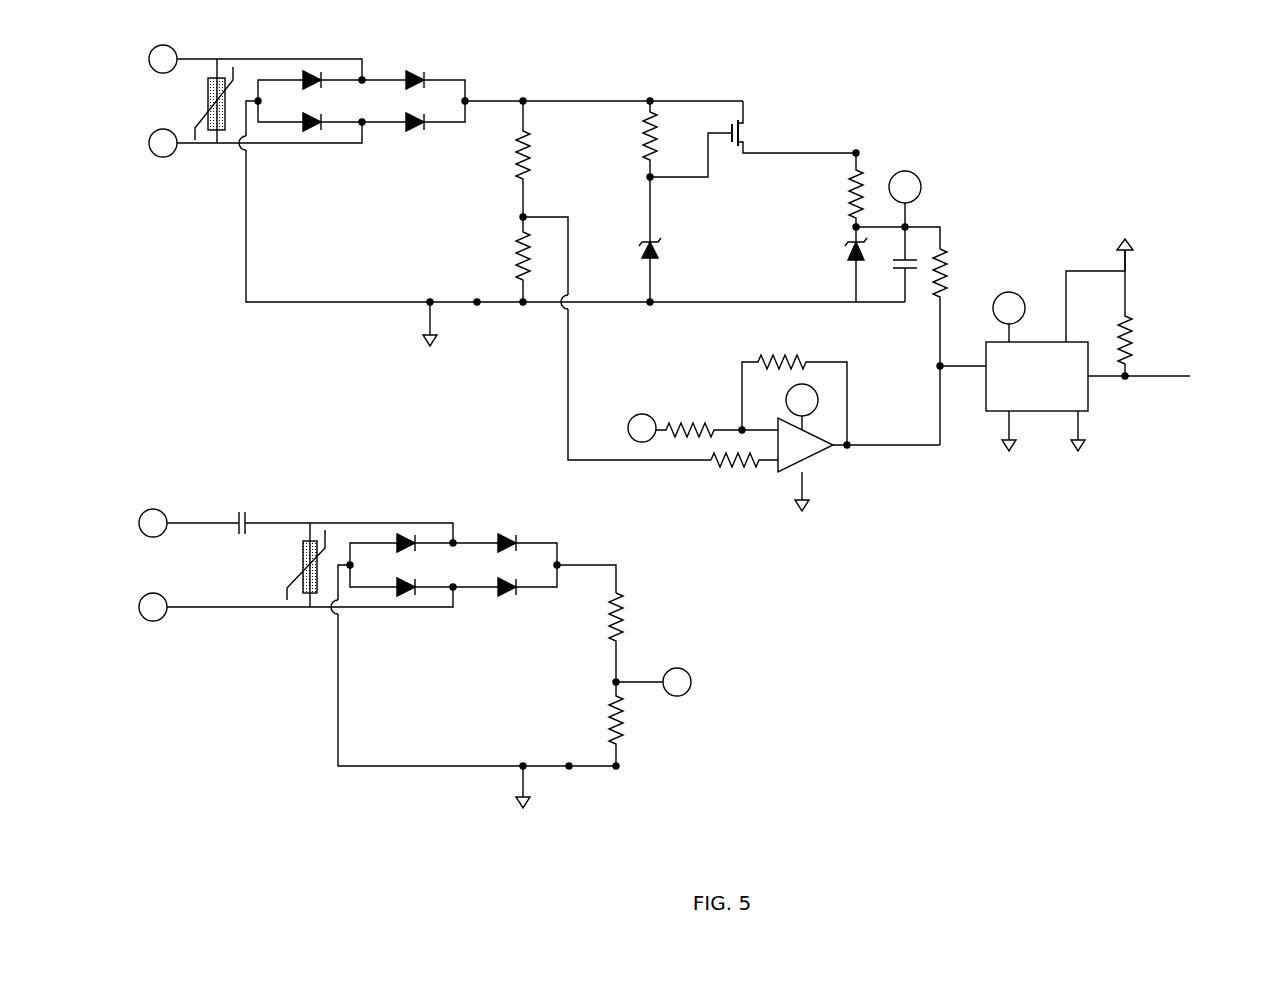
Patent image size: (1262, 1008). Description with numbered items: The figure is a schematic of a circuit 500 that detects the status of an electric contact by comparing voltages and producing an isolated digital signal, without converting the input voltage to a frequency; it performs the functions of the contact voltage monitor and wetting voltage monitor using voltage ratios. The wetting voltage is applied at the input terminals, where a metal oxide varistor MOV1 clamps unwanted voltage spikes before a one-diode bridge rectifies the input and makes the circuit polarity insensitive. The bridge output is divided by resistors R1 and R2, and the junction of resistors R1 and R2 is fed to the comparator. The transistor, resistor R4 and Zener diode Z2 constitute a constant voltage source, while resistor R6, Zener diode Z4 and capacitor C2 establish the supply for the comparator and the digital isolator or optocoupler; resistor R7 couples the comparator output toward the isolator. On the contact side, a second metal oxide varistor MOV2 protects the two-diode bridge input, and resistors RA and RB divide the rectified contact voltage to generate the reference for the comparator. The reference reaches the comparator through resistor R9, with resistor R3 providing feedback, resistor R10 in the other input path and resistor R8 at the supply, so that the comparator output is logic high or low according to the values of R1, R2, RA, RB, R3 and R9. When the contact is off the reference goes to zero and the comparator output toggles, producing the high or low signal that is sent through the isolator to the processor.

The circuit 500 is at (137, 393).
The metal oxide varistor MOV1 is at (230, 90).
The metal oxide varistor MOV2 is at (322, 553).
The resistor R1 is at (509, 159).
The resistor R2 is at (512, 259).
The resistor R3 is at (794, 388).
The resistor R4 is at (634, 139).
The resistor R6 is at (842, 190).
The resistor R7 is at (953, 307).
The resistor R8 is at (812, 407).
The resistor R9 is at (717, 421).
The resistor R10 is at (744, 468).
The resistor RA is at (602, 637).
The resistor RB is at (605, 724).
The Zener diode Z2 is at (633, 249).
The Zener diode Z4 is at (870, 250).
The capacitor C2 is at (907, 264).